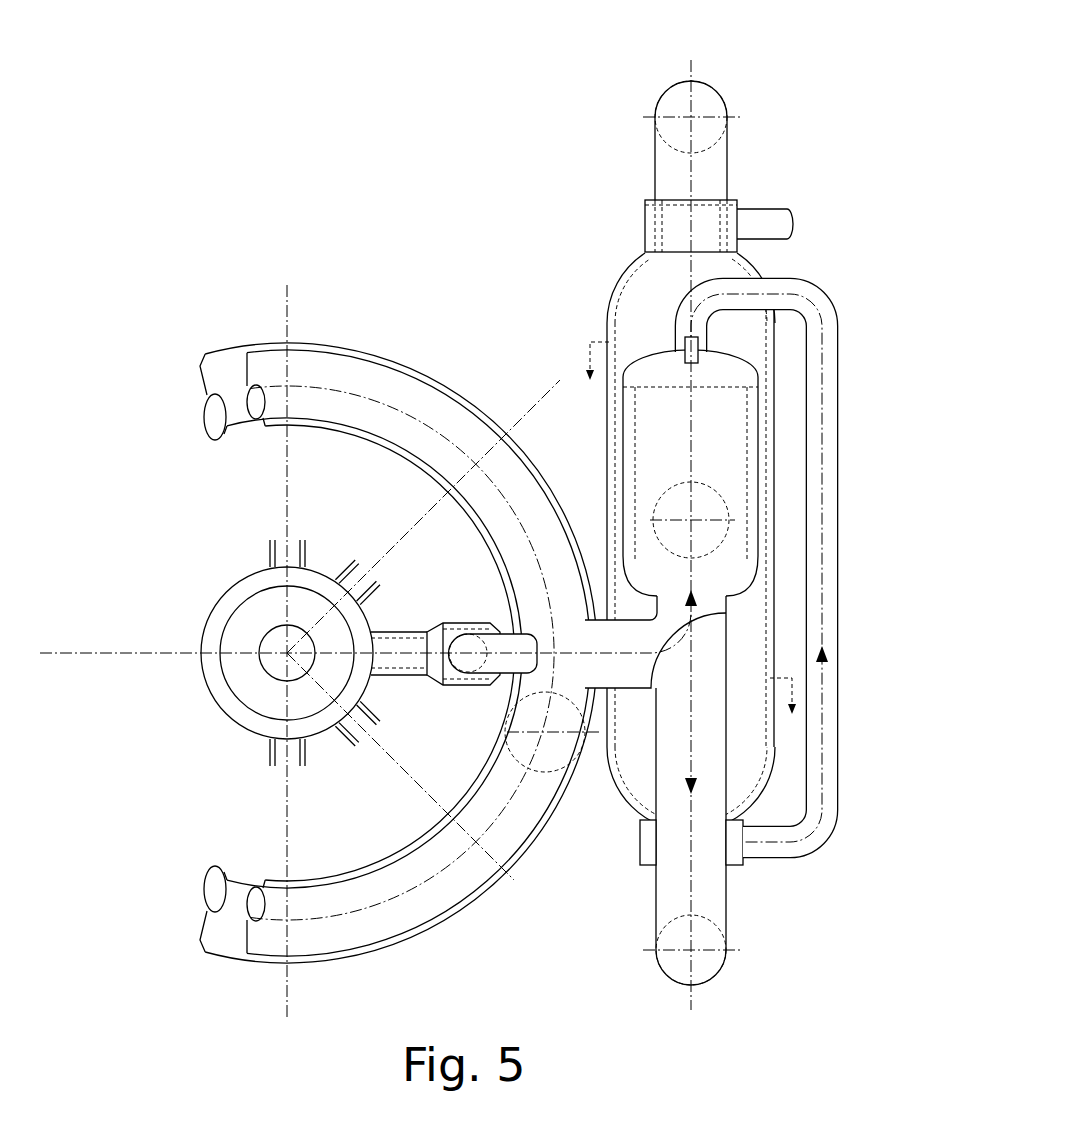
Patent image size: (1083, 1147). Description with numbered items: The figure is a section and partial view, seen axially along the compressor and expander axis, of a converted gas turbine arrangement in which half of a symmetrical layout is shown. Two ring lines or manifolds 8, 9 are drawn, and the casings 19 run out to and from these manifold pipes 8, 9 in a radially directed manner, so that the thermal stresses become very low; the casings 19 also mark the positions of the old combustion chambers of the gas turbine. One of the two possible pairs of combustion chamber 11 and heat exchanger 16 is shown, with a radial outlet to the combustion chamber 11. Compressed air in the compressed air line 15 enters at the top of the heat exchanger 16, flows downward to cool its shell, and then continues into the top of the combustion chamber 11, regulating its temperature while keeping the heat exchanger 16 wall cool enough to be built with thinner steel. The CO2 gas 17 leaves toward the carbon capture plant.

The ring manifold 8 is at (335, 375).
The ring manifold 9 is at (222, 363).
The combustion chamber 11 is at (722, 568).
The compressed air line 15 is at (815, 224).
The heat exchanger 16 is at (617, 285).
The CO2 gas to carbon capture 17 is at (707, 81).
The casings 19 is at (497, 583).